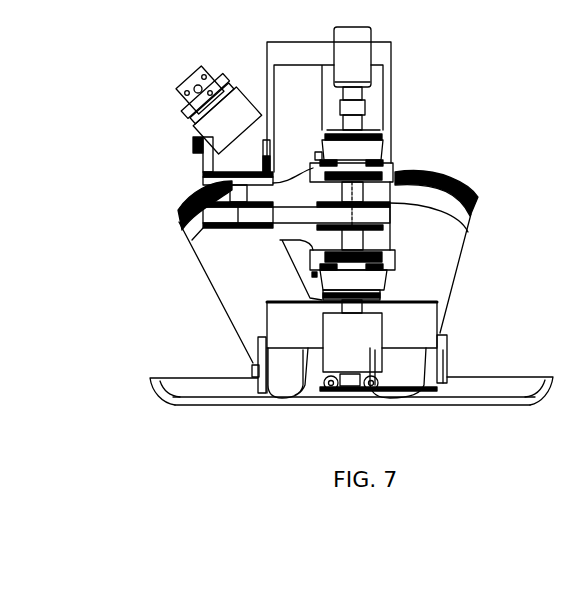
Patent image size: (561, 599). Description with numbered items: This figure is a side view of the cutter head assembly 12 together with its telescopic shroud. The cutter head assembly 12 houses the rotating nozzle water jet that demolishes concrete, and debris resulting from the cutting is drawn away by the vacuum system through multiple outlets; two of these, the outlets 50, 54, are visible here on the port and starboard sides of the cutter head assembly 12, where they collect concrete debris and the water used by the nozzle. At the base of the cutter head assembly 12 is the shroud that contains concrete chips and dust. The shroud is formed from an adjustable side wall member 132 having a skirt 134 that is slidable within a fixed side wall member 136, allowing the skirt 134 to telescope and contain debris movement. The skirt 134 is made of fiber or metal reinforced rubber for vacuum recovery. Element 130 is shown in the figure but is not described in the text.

The cutter head assembly 12 is at (430, 120).
The outlet 50 is at (197, 260).
The outlet 54 is at (460, 250).
The base assembly 130 is at (354, 345).
The adjustable side wall member 132 is at (448, 358).
The skirt 134 is at (157, 375).
The fixed side wall member 136 is at (267, 310).